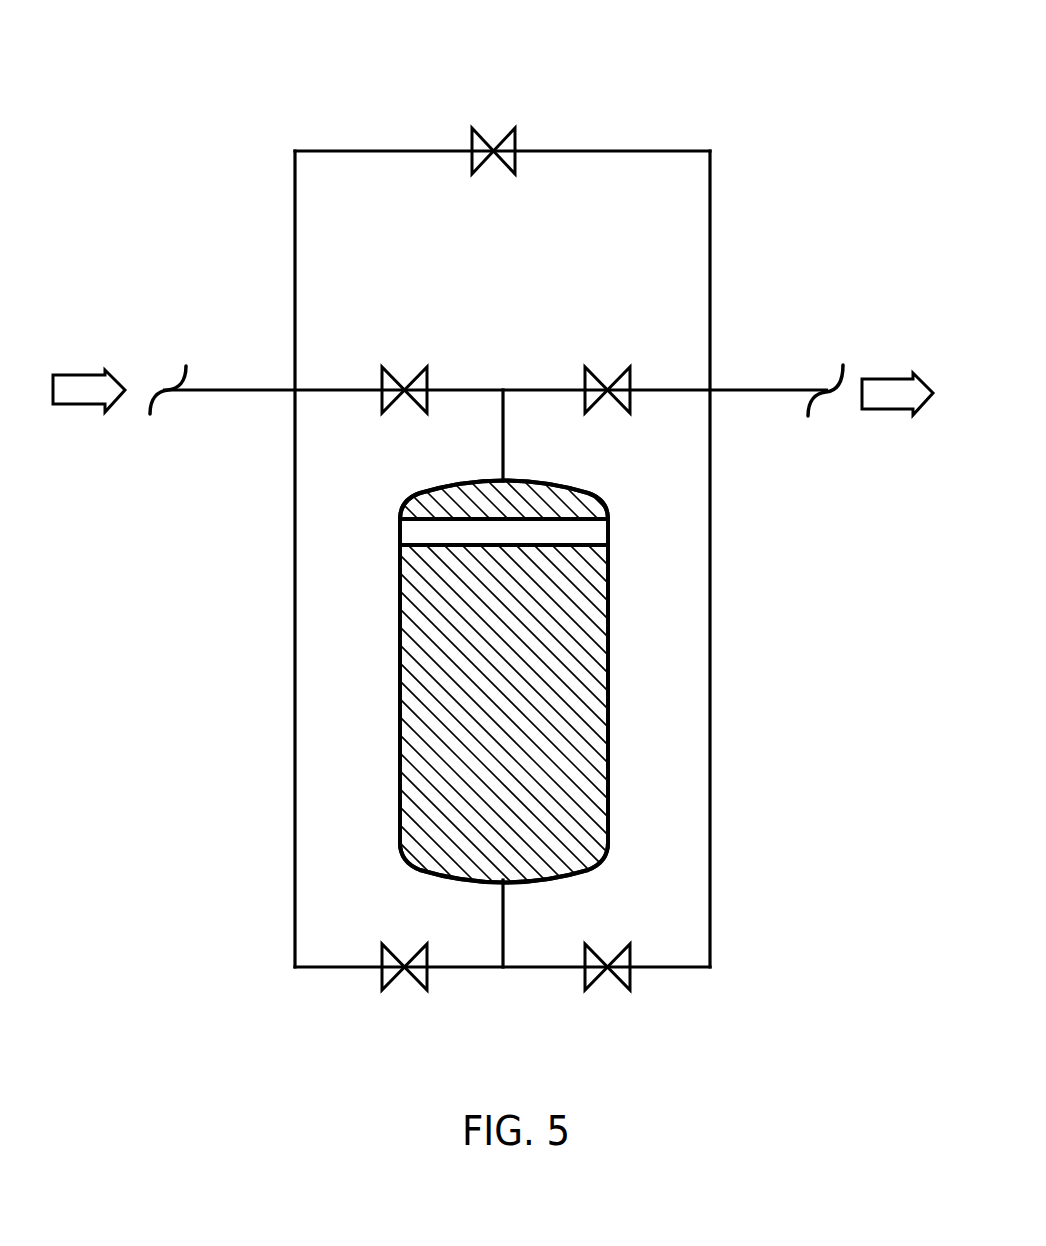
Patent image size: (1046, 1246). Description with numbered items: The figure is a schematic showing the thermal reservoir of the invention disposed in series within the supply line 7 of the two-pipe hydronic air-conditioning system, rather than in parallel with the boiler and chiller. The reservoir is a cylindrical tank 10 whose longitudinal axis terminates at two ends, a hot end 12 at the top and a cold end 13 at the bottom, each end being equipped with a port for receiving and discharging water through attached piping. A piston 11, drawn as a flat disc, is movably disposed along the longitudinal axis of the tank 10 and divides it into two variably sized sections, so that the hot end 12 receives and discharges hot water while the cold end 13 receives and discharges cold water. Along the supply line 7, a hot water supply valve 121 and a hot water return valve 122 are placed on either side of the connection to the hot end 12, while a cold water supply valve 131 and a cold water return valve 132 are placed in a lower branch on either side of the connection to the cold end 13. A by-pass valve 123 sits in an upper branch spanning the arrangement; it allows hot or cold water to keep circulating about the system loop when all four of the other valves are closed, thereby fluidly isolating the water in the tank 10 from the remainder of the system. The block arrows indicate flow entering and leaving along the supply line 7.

The supply line 7 is at (246, 378).
The tank 10 is at (379, 720).
The piston 11 is at (485, 531).
The hot end 12 is at (527, 491).
The cold end 13 is at (470, 870).
The hot water supply valve 121 is at (397, 371).
The hot water return valve 122 is at (610, 365).
The by-pass valve 123 is at (489, 130).
The cold water supply valve 131 is at (397, 991).
The cold water return valve 132 is at (614, 993).